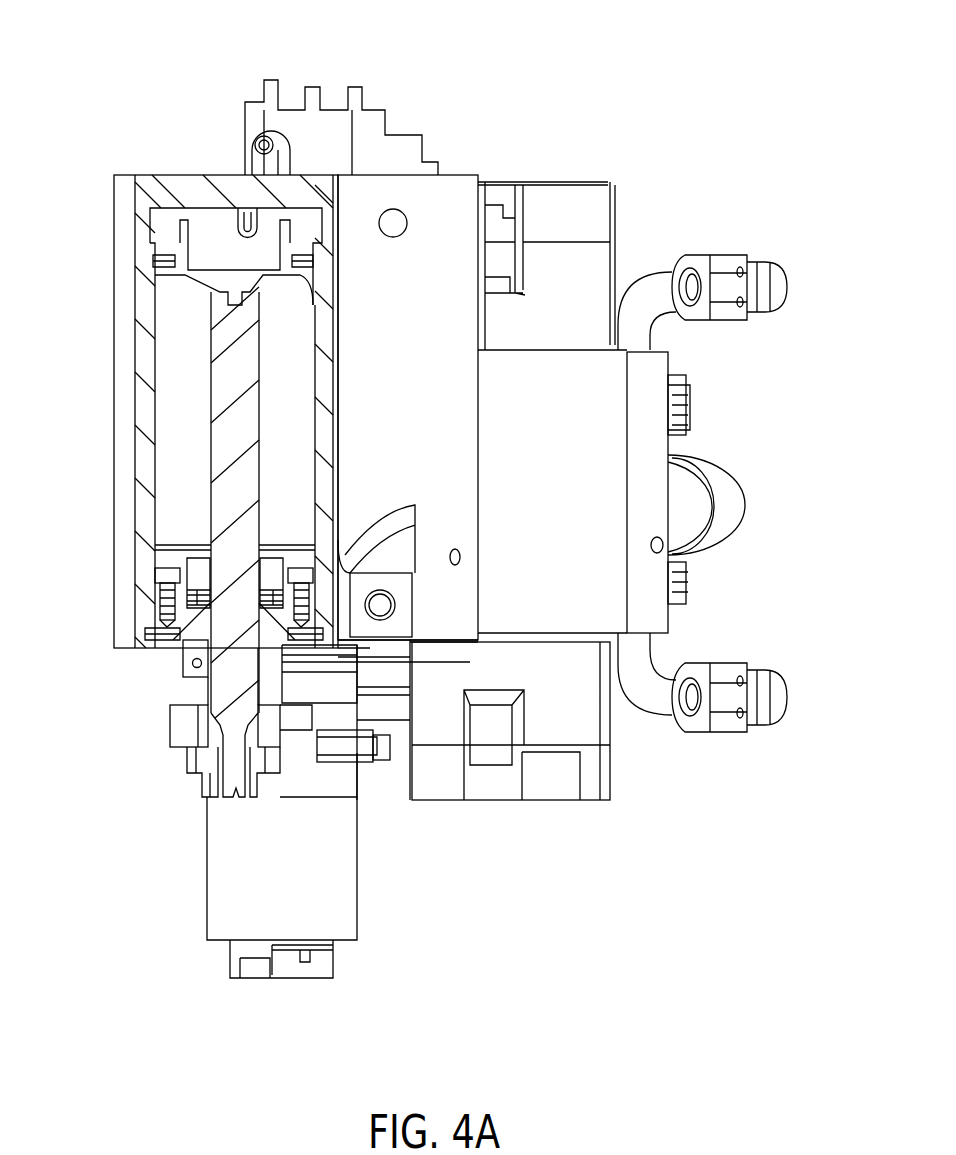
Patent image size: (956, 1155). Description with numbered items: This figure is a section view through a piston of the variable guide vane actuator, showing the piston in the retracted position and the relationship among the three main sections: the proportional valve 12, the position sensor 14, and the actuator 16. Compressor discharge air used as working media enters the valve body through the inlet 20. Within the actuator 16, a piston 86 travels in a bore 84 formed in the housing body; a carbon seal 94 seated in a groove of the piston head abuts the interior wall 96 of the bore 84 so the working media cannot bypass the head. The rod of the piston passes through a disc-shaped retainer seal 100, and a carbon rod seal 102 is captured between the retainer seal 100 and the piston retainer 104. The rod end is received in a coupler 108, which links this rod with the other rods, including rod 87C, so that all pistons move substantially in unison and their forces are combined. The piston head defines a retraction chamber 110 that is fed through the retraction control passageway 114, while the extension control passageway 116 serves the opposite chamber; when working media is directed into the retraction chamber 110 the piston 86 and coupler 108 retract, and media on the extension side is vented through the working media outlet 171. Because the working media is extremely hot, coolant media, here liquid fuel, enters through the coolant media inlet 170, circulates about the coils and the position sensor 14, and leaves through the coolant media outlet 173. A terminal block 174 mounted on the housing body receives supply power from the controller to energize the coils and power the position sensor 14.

The proportional valve 12 is at (627, 722).
The position sensor 14 is at (370, 929).
The actuator 16 is at (110, 612).
The inlet 20 is at (792, 302).
The bore 84 is at (168, 340).
The piston 86 is at (272, 483).
The rod 87C is at (262, 346).
The seal 94 is at (162, 262).
The interior wall 96 is at (158, 411).
The retainer seal 100 is at (152, 590).
The rod seal 102 is at (215, 612).
The piston retainer 104 is at (286, 673).
The coupler 108 is at (170, 732).
The retraction chamber 110 is at (206, 508).
The retraction control passageway 114 is at (166, 566).
The extension control passageway 116 is at (250, 214).
The coolant media inlet 170 is at (748, 530).
The working media outlet 171 is at (788, 696).
The coolant media outlet 173 is at (378, 763).
The terminal block 174 is at (251, 95).